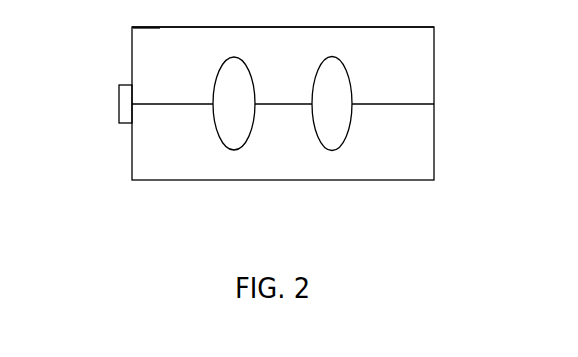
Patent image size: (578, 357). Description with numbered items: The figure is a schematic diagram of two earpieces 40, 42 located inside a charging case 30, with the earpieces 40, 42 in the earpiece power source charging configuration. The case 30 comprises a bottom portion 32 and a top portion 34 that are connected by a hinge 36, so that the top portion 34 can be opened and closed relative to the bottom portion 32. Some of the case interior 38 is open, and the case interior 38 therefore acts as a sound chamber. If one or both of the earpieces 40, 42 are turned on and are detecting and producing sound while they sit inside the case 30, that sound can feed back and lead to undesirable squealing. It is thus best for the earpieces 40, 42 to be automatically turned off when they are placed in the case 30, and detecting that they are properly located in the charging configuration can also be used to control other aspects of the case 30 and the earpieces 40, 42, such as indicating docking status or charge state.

The charging case 30 is at (177, 202).
The bottom portion 32 is at (434, 142).
The top portion 34 is at (434, 68).
The hinge 36 is at (118, 106).
The case interior 38 is at (162, 57).
The earpiece 40 is at (216, 131).
The earpiece 42 is at (350, 131).